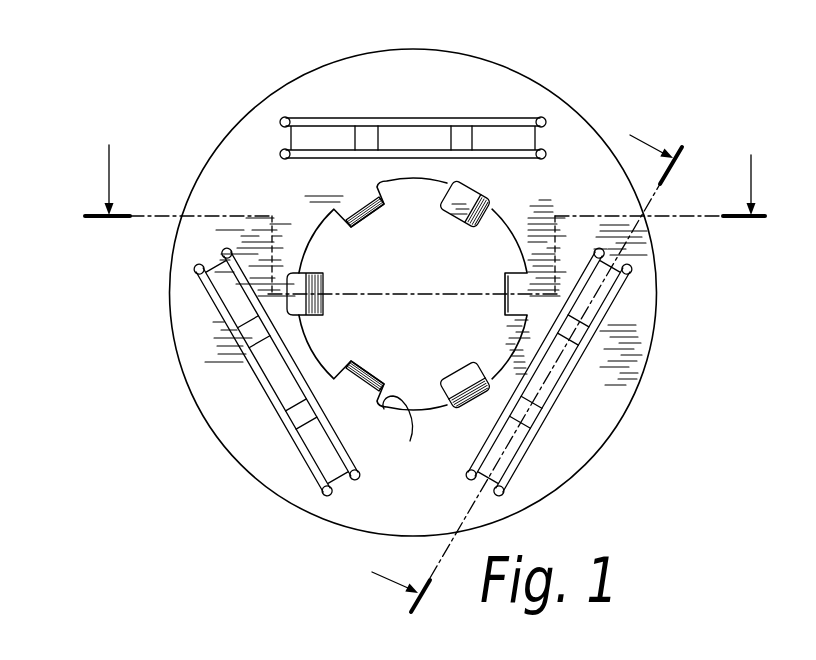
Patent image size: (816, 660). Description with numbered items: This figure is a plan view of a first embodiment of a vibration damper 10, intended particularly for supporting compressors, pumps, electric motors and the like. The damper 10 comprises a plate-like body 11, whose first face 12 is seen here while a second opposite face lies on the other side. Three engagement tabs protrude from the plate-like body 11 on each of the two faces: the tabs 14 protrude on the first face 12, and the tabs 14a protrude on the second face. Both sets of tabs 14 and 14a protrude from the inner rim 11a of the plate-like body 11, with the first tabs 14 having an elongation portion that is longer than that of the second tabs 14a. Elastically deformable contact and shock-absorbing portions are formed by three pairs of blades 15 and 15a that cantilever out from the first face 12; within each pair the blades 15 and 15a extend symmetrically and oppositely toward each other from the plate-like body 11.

The vibration damper 10 is at (263, 62).
The plate-like body 11 is at (608, 450).
The inner rim 11a is at (410, 441).
The first face 12 is at (451, 55).
The tabs 14 is at (469, 203).
The tabs 14a is at (492, 288).
The blades 15 is at (312, 433).
The blades 15a is at (228, 289).